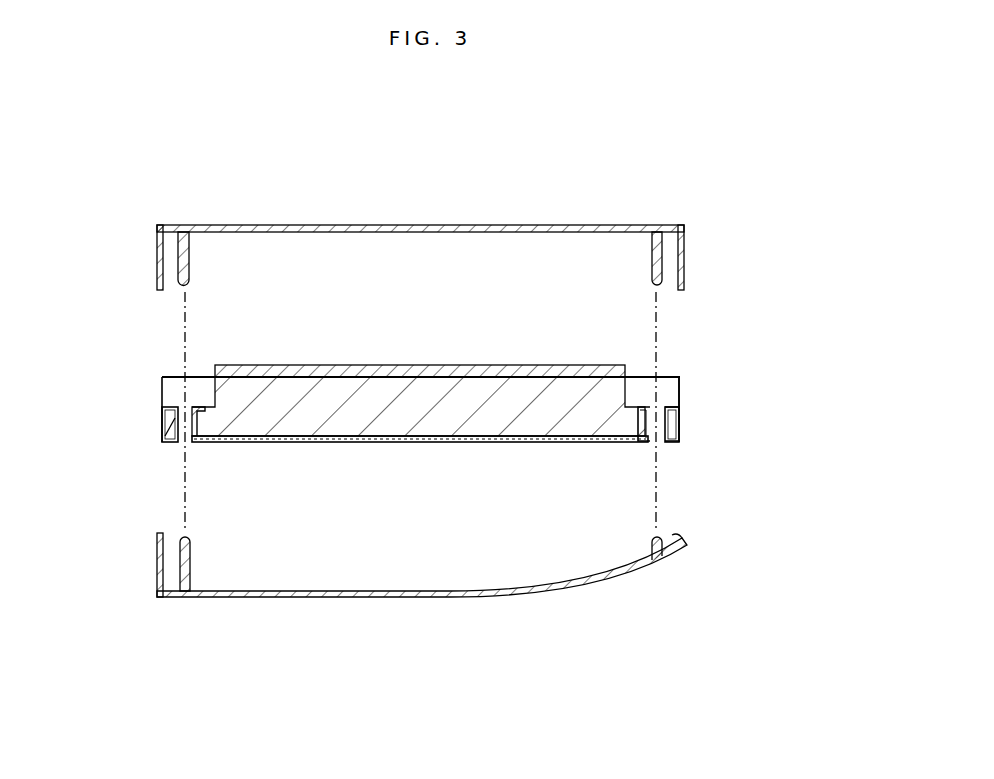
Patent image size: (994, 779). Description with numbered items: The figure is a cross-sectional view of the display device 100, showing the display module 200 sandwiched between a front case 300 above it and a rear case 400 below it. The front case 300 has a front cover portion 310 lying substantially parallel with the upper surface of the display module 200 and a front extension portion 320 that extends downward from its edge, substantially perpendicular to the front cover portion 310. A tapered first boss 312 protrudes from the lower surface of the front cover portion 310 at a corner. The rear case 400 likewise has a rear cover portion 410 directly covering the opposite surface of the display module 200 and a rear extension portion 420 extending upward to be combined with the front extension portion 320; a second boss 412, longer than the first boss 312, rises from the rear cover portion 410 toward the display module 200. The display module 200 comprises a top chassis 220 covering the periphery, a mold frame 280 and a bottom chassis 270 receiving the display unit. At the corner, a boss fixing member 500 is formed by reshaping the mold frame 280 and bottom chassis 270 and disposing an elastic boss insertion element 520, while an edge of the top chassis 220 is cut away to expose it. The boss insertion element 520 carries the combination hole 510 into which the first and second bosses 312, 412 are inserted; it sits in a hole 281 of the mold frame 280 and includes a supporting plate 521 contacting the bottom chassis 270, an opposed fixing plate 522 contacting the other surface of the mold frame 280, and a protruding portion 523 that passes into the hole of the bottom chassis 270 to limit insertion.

The display device 100 is at (385, 162).
The front case 300 is at (132, 214).
The front cover portion 310 is at (452, 224).
The first boss 312 is at (666, 236).
The front extension portion 320 is at (157, 256).
The display module 200 is at (128, 354).
The top chassis 220 is at (418, 365).
The bottom chassis 270 is at (320, 442).
The mold frame 280 is at (413, 432).
The hole 281 is at (630, 428).
The combination hole 510 is at (648, 437).
The boss fixing member 500 is at (684, 458).
The boss insertion element 520 is at (673, 388).
The supporting plate 521 is at (668, 425).
The fixing plate 522 is at (668, 408).
The protruding portion 523 is at (672, 440).
The rear case 400 is at (138, 533).
The rear cover portion 410 is at (452, 600).
The second boss 412 is at (665, 550).
The rear extension portion 420 is at (157, 563).